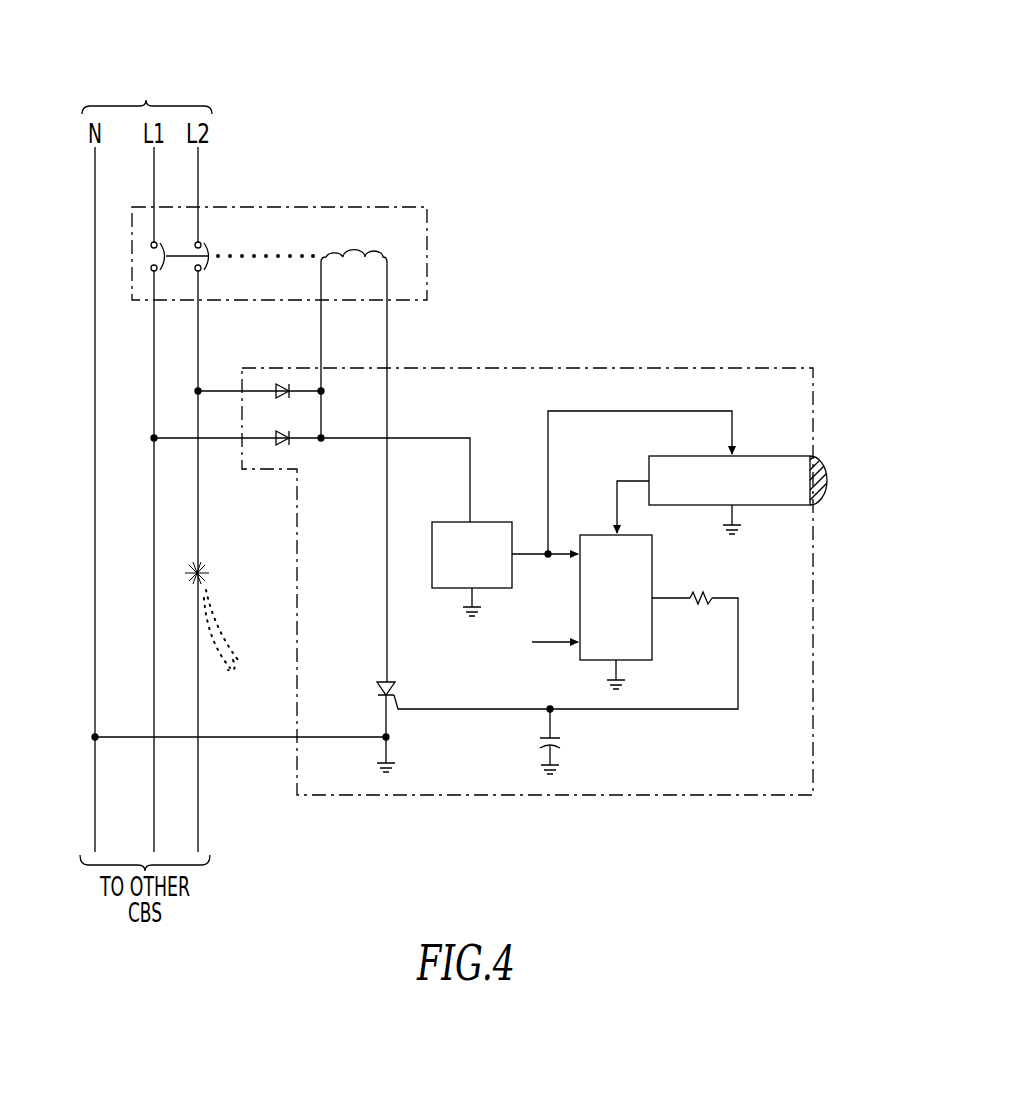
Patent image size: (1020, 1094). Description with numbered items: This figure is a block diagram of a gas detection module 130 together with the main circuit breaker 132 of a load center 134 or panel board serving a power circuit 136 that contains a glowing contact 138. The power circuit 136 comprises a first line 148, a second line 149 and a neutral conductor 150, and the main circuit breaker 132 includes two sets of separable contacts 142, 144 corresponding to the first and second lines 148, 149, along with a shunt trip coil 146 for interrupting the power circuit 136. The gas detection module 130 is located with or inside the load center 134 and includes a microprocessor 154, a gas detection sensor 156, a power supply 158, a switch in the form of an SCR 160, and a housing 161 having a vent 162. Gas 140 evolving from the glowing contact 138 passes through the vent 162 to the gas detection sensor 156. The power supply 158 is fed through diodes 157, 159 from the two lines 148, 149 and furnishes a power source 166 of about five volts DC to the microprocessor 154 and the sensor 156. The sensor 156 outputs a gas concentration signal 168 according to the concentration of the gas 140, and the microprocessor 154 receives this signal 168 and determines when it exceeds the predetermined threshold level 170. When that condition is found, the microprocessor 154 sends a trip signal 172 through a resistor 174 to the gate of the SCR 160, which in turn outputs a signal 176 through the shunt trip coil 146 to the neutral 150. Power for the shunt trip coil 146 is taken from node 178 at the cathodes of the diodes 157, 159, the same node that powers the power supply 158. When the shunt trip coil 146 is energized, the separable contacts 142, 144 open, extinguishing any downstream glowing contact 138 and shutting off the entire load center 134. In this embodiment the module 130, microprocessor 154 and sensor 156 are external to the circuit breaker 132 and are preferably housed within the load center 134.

The gas detection module 130 is at (561, 614).
The main circuit breaker 132 is at (428, 281).
The load center 134 is at (307, 218).
The power circuit 136 is at (145, 63).
The glowing contact 138 is at (210, 573).
The gas 140 is at (228, 631).
The first set of separable contacts 142 is at (158, 272).
The second set of separable contacts 144 is at (208, 261).
The shunt trip coil 146 is at (352, 253).
The first line 148 is at (154, 175).
The second line 149 is at (198, 178).
The neutral conductor 150 is at (95, 195).
The microprocessor 154 is at (656, 549).
The gas detection sensor 156 is at (766, 478).
The diode 157 is at (282, 448).
The power supply 158 is at (458, 520).
The diode 159 is at (278, 384).
The SCR 160 is at (383, 680).
The housing 161 is at (813, 740).
The vent 162 is at (829, 476).
The power source 166 is at (550, 560).
The gas concentration signal 168 is at (617, 480).
The predetermined threshold level 170 is at (553, 648).
The trip signal 172 is at (667, 602).
The resistor 174 is at (708, 596).
The SCR output signal 176 is at (386, 500).
The node 178 is at (322, 442).